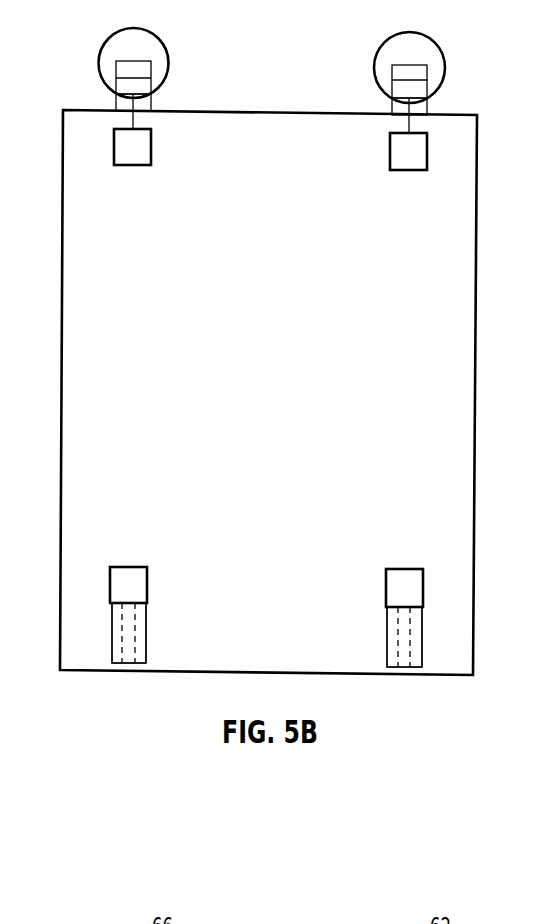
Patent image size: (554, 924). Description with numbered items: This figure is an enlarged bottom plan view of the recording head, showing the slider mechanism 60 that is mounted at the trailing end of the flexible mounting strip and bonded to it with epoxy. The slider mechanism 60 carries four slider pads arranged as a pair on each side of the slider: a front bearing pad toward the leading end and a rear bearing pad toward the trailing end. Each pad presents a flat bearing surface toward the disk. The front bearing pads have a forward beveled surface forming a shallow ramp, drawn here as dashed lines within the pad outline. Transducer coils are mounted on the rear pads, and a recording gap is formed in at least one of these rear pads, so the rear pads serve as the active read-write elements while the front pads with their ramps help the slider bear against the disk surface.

The slider mechanism 60 is at (62, 340).